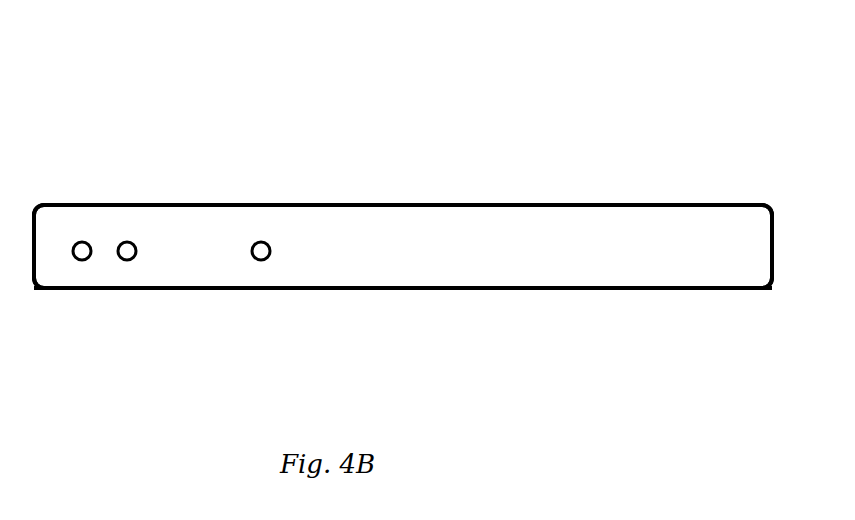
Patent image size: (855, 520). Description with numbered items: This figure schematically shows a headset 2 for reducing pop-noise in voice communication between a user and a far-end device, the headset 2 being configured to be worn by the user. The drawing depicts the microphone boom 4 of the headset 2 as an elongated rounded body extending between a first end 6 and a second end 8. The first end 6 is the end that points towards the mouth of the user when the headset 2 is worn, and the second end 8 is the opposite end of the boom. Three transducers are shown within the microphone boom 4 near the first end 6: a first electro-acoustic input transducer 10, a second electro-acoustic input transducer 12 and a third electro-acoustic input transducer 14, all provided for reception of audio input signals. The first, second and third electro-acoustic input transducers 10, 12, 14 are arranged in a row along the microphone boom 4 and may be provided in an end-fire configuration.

The headset 2 is at (395, 155).
The microphone boom 4 is at (403, 246).
The first end 6 is at (73, 293).
The second end 8 is at (735, 293).
The first electro-acoustic input transducer 10 is at (82, 241).
The second electro-acoustic input transducer 12 is at (127, 241).
The third electro-acoustic input transducer 14 is at (261, 241).